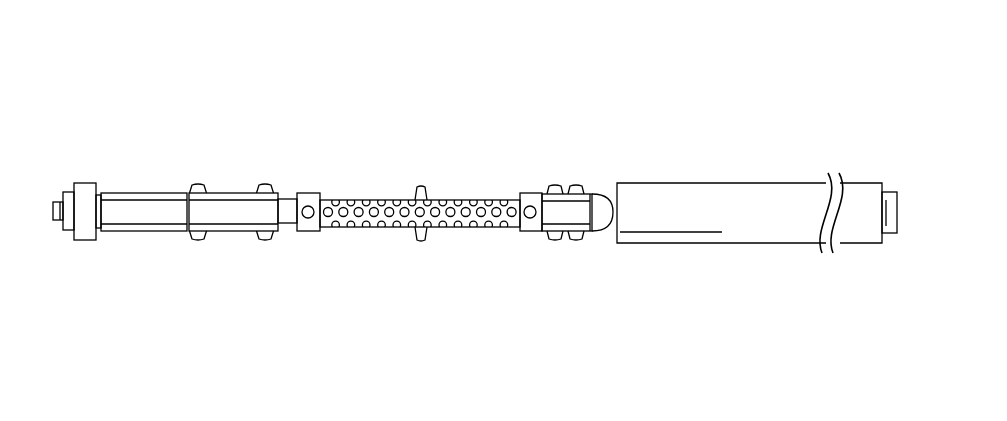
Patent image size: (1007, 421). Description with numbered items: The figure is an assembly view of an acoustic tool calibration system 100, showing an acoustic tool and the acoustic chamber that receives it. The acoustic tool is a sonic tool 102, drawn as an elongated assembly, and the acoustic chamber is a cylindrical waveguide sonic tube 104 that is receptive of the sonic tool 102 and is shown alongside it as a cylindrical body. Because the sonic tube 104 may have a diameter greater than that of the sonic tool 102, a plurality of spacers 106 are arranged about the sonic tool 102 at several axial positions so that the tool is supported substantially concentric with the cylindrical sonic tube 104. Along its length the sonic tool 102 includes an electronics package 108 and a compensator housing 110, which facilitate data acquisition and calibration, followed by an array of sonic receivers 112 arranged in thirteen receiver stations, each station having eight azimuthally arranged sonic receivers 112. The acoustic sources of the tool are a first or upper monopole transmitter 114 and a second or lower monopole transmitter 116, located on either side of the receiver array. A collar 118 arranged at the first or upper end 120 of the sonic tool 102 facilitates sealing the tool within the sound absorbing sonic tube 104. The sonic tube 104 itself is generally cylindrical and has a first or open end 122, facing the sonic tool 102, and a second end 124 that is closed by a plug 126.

The acoustic tool calibration system 100 is at (648, 102).
The sonic tool 102 is at (314, 159).
The sonic tube 104 is at (778, 173).
The spacers 106 is at (195, 184).
The electronics package 108 is at (155, 222).
The compensator housing 110 is at (228, 200).
The sonic receivers 112 is at (463, 198).
The upper monopole transmitter 114 is at (306, 222).
The lower monopole transmitter 116 is at (540, 198).
The collar 118 is at (84, 222).
The upper end 120 is at (58, 200).
The open end 122 is at (608, 230).
The second end 124 is at (873, 183).
The plug 126 is at (888, 233).